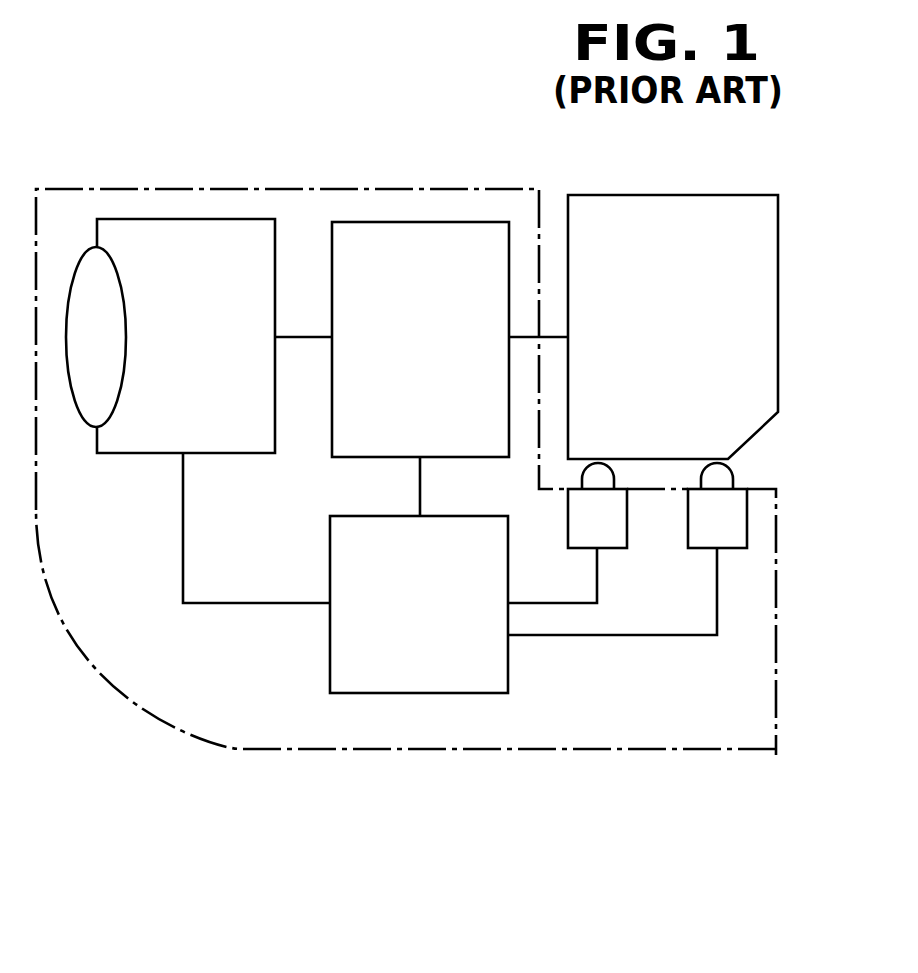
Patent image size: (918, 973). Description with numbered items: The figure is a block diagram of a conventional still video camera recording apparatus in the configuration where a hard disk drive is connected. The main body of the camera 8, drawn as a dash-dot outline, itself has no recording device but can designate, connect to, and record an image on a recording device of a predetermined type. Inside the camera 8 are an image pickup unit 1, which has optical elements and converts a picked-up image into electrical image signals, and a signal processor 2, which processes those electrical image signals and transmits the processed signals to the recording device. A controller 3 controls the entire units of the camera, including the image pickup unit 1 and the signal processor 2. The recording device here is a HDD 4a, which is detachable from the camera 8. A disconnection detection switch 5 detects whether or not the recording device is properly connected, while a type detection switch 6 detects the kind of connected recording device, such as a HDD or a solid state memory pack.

The image pickup unit 1 is at (172, 222).
The signal processor 2 is at (366, 225).
The controller 3 is at (333, 628).
The HDD 4a is at (608, 208).
The disconnection detection switch 5 is at (620, 548).
The type detection switch 6 is at (735, 548).
The main body of a camera 8 is at (236, 750).